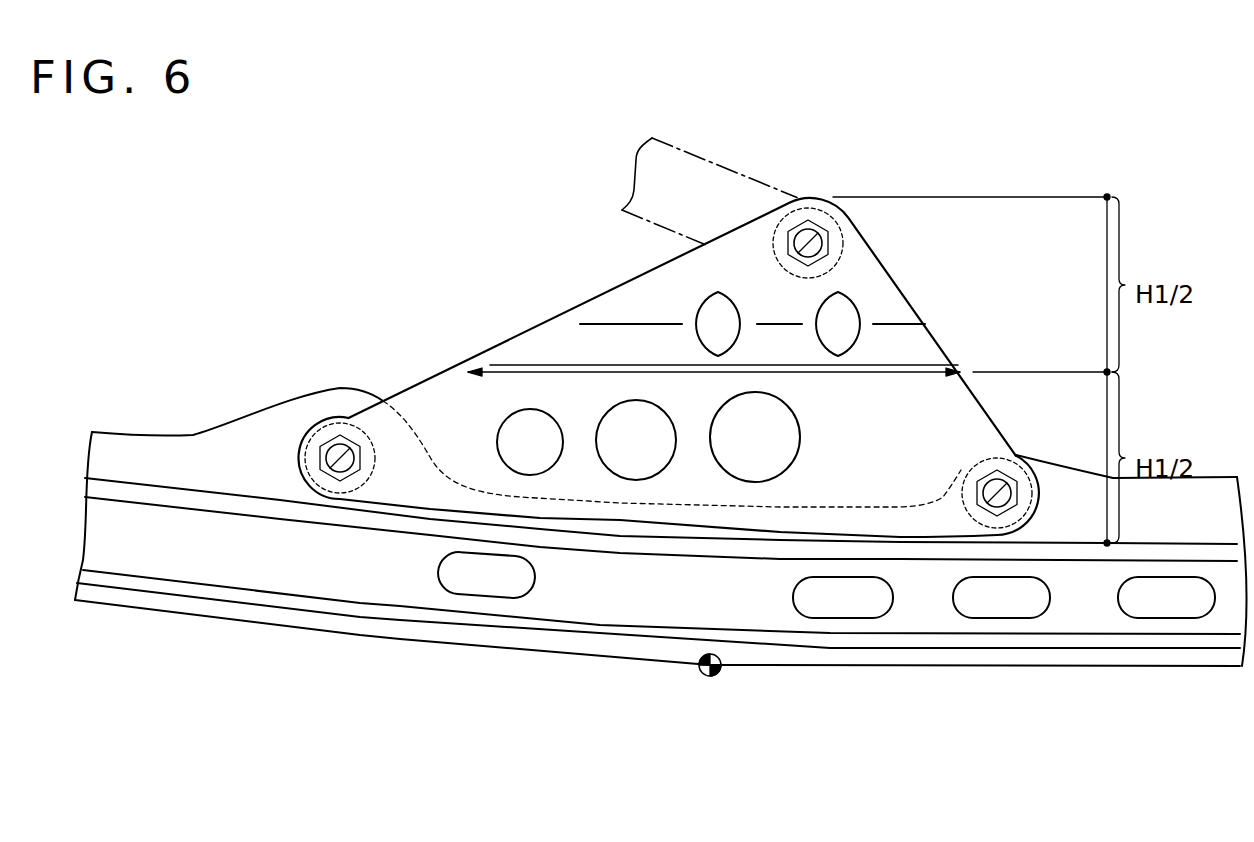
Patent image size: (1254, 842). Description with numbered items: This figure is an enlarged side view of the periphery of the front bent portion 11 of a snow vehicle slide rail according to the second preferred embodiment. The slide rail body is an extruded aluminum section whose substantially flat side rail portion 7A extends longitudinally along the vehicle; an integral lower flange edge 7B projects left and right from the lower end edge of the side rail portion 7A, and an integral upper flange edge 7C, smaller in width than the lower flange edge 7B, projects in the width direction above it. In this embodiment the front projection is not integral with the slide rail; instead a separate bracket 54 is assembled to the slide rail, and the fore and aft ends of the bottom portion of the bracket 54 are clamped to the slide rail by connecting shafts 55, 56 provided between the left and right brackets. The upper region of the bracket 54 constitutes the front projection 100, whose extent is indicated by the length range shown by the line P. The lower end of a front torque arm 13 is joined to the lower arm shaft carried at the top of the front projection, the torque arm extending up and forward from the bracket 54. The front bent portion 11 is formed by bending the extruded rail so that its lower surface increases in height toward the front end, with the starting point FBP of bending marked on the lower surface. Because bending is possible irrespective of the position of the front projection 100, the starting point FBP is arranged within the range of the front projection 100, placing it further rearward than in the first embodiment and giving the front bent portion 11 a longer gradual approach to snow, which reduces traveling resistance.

The side rail portion 7A is at (237, 574).
The lower flange edge 7B is at (405, 612).
The upper flange edge 7C is at (337, 518).
The front bent portion 11 is at (137, 588).
The front torque arm 13 is at (692, 175).
The bracket 54 is at (645, 310).
The connecting shaft 55 is at (322, 428).
The connecting shaft 56 is at (1012, 468).
The front projection 100 is at (878, 280).
The line indicating length range of front projection P is at (928, 366).
The starting point of bending FBP is at (707, 678).